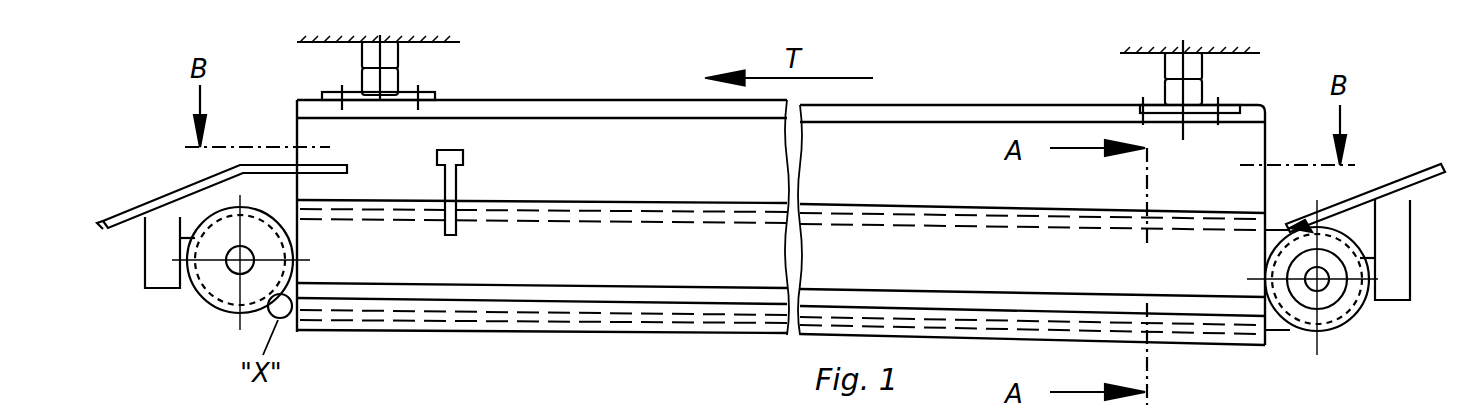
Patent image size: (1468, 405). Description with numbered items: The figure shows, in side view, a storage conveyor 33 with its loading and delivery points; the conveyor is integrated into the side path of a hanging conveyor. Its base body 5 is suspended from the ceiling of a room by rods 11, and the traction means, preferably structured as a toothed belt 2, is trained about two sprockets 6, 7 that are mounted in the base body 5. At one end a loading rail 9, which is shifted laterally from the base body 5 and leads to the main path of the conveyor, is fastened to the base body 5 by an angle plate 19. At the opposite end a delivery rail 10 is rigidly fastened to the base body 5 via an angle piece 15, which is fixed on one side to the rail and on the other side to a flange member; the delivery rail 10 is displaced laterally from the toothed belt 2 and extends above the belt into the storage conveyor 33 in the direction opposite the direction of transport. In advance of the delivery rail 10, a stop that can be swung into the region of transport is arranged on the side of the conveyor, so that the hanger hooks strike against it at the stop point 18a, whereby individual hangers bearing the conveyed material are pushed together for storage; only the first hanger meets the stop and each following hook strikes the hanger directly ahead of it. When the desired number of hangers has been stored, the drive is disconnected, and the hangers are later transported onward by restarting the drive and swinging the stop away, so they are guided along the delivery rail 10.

The toothed belt 2 is at (1278, 215).
The base body 5 is at (653, 252).
The sprocket 6 is at (216, 282).
The sprocket 7 is at (1333, 295).
The loading rail 9 is at (1390, 190).
The delivery rail 10 is at (164, 200).
The rods 11 is at (400, 80).
The angle piece 15 is at (152, 265).
The stop point 18a is at (452, 190).
The angle plate 19 is at (1395, 248).
The storage conveyor 33 is at (953, 98).